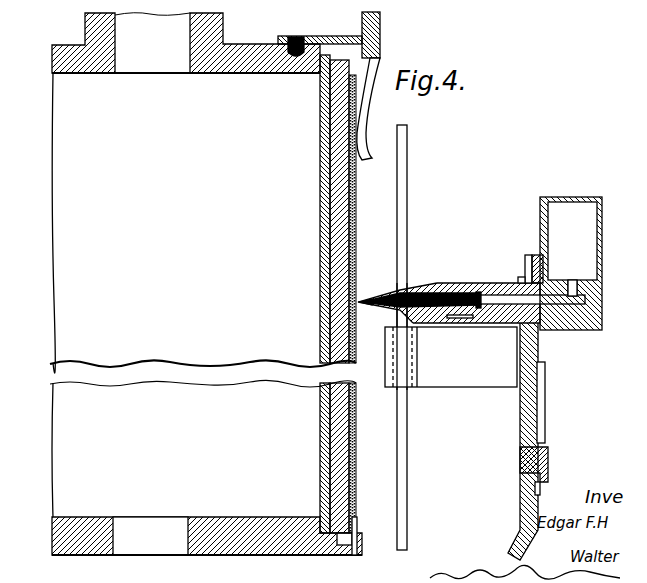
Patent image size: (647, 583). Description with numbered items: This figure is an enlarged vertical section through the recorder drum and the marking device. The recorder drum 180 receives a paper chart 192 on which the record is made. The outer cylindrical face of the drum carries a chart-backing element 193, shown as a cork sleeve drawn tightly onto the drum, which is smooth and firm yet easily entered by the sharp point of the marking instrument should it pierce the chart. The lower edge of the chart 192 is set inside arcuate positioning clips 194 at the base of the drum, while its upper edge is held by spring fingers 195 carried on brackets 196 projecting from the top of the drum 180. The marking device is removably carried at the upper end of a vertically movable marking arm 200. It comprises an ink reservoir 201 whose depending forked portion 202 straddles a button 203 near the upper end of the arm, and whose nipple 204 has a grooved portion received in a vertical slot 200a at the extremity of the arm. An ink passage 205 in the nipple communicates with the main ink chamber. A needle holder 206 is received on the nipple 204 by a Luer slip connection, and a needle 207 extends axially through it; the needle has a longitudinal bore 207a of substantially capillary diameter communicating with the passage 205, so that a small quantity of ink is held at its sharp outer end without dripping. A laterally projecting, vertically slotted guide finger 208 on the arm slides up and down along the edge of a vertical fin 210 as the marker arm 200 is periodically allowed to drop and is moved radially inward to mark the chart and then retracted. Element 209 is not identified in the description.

The recorder drum 180 is at (236, 50).
The chart 192 is at (351, 232).
The chart-backing element 193 is at (338, 252).
The arcuate positioning clip 194 is at (355, 525).
The spring finger 195 is at (371, 106).
The bracket 196 is at (350, 40).
The marking arm 200 is at (524, 542).
The vertical slot 200a is at (530, 255).
The ink reservoir 201 is at (600, 222).
The forked portion 202 is at (541, 392).
The button 203 is at (545, 450).
The nipple 204 is at (501, 287).
The ink passage 205 is at (567, 304).
The needle holder 206 is at (435, 288).
The needle 207 is at (372, 305).
The longitudinal bore 207a is at (450, 290).
The guide finger 208 is at (455, 377).
The bore 209 is at (412, 387).
The vertical fin 210 is at (403, 200).